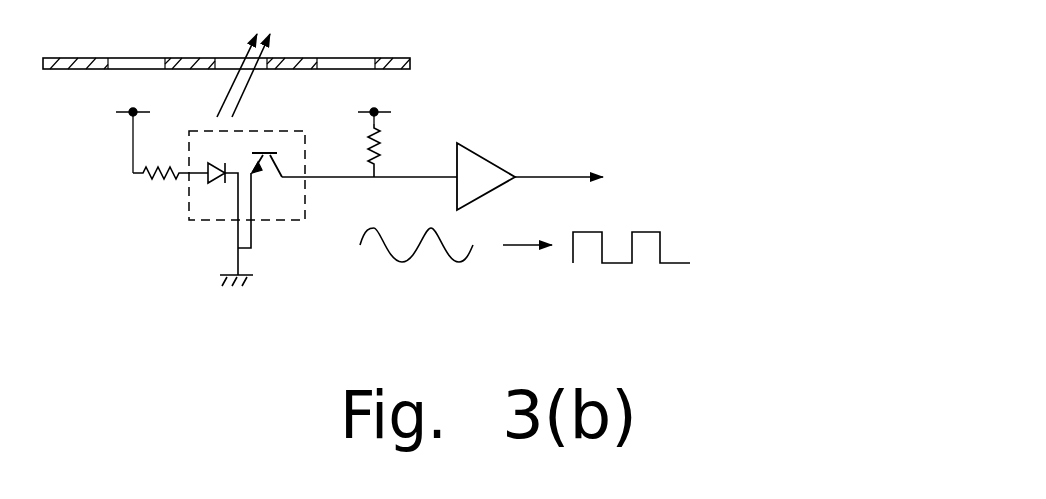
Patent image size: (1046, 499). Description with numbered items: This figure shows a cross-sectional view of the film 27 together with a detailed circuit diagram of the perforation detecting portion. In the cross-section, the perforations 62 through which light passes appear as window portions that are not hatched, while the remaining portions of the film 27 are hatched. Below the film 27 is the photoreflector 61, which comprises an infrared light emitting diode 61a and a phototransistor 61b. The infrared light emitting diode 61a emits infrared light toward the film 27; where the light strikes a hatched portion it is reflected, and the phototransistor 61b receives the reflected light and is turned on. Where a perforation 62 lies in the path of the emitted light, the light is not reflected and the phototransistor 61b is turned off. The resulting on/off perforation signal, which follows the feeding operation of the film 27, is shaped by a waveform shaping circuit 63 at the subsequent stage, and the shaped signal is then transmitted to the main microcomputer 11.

The film 27 is at (396, 57).
The perforations 62 is at (227, 57).
The photoreflector 61 is at (222, 174).
The infrared light emitting diode 61a is at (222, 180).
The phototransistor 61b is at (284, 165).
The waveform shaping circuit 63 is at (468, 152).
The main microcomputer 11 is at (778, 196).